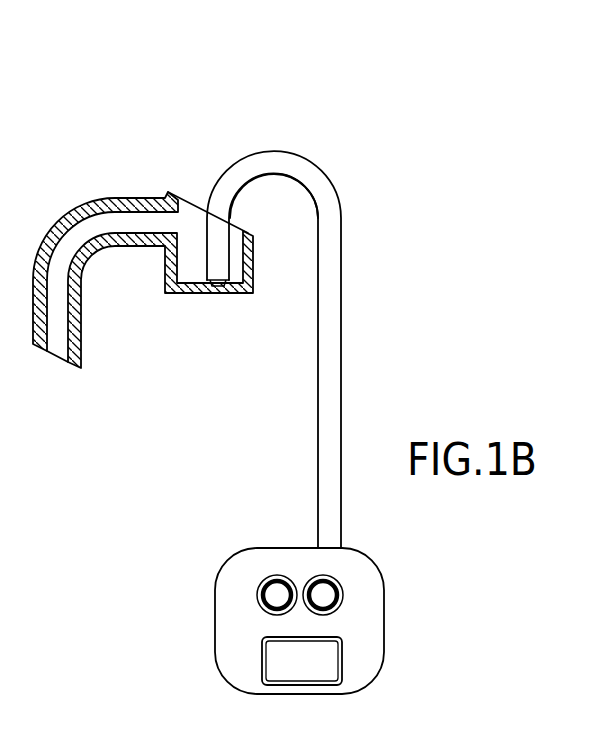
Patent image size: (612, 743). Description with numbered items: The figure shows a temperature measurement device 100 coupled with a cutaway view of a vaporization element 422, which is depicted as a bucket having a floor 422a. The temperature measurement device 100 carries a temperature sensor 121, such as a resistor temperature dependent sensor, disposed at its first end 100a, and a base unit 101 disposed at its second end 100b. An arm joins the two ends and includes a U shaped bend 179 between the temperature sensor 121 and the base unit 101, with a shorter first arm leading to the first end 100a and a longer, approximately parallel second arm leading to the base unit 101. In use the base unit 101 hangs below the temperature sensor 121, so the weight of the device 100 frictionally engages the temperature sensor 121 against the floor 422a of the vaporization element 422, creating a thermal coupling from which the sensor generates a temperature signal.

The temperature measurement device 100 is at (391, 345).
The first end 100a is at (220, 245).
The second end 100b is at (215, 667).
The base unit 101 is at (368, 662).
The temperature sensor 121 is at (330, 293).
The U shaped bend 179 is at (283, 173).
The vaporization element 422 is at (118, 197).
The floor 422a is at (197, 295).